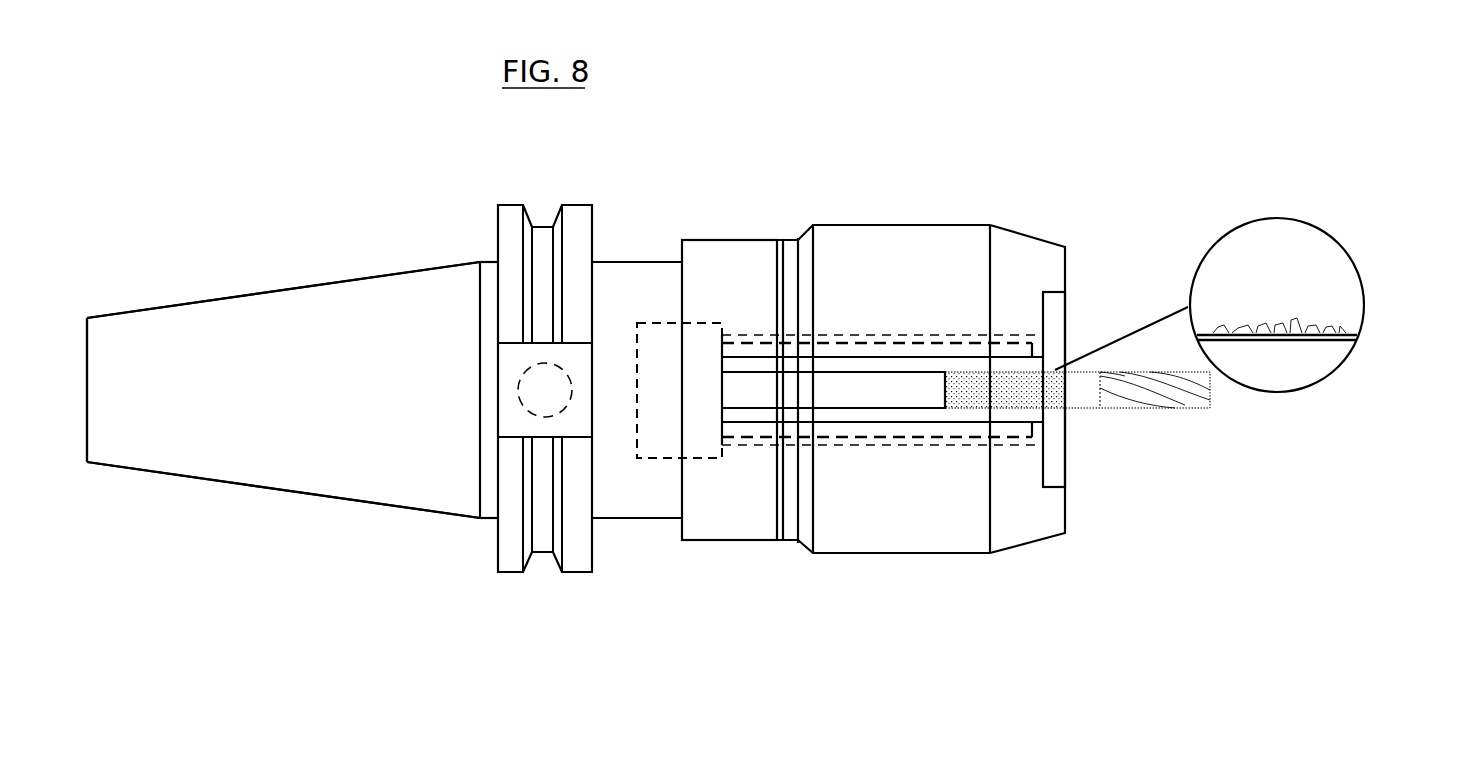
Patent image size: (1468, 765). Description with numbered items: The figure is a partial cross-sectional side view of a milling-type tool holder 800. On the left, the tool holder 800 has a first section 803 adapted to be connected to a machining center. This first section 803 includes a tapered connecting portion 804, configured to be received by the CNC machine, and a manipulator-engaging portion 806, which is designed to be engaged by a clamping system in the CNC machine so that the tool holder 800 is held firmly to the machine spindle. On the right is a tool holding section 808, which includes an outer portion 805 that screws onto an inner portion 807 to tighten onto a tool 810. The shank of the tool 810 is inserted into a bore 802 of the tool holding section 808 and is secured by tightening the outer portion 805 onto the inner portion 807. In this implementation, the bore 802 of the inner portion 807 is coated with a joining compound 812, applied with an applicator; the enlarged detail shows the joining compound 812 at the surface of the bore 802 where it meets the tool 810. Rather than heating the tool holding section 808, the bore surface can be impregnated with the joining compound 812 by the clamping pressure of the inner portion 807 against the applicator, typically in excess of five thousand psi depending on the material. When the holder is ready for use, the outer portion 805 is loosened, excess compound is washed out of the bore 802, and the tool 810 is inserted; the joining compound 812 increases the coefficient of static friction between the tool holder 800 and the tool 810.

The tool holder 800 is at (645, 243).
The bore 802 is at (1020, 387).
The first section 803 is at (590, 182).
The tapered connecting portion 804 is at (252, 345).
The outer portion 805 is at (1015, 263).
The manipulator-engaging portion 806 is at (590, 587).
The inner portion 807 is at (1002, 353).
The tool holding section 808 is at (993, 202).
The tool 810 is at (1282, 365).
The joining compound 812 is at (1340, 330).